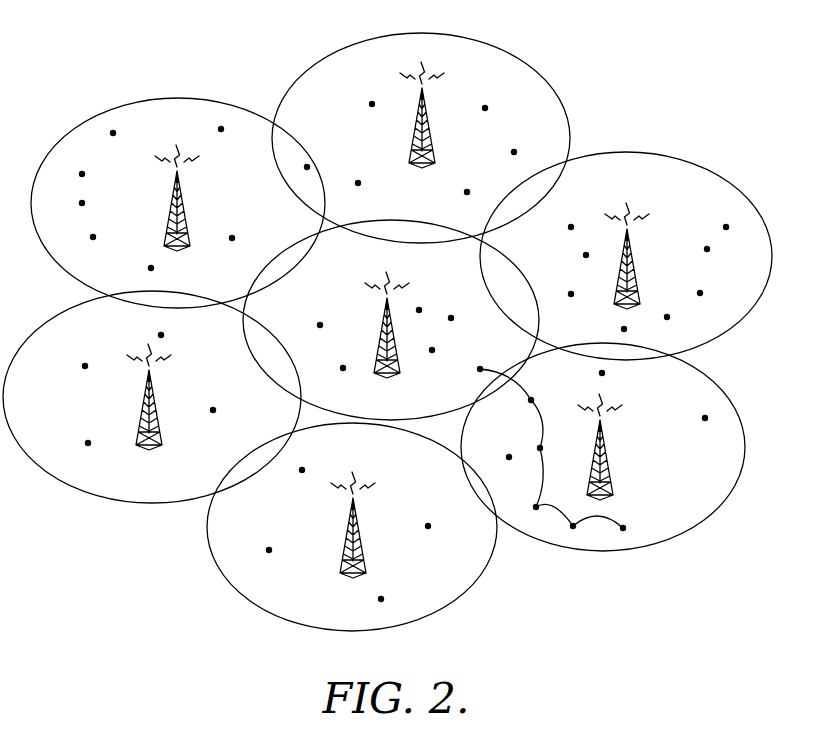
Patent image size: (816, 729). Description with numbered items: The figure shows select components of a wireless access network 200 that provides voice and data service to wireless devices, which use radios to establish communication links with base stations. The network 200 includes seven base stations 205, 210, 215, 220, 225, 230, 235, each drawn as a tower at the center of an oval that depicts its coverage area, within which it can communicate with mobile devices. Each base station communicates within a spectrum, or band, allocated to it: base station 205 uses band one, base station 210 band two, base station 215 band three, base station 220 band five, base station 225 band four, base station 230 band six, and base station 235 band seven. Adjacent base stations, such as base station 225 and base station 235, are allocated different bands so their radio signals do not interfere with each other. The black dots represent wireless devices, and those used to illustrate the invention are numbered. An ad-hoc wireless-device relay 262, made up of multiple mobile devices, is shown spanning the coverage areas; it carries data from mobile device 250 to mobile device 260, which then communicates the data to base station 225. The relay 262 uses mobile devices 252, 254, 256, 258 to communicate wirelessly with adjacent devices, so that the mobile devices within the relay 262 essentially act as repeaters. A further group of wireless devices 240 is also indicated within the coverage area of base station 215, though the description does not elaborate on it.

The wireless access network 200 is at (141, 63).
The base station 205 is at (186, 212).
The base station 210 is at (434, 138).
The base station 215 is at (640, 283).
The base station 220 is at (135, 425).
The base station 225 is at (376, 347).
The base station 230 is at (341, 546).
The base station 235 is at (610, 478).
The group of mobile stations 240 is at (707, 249).
The mobile device 250 is at (623, 528).
The mobile device 252 is at (573, 526).
The mobile device 254 is at (536, 507).
The mobile device 256 is at (540, 448).
The mobile device 258 is at (531, 397).
The mobile device 260 is at (478, 373).
The ad-hoc wireless-device relay 262 is at (497, 371).